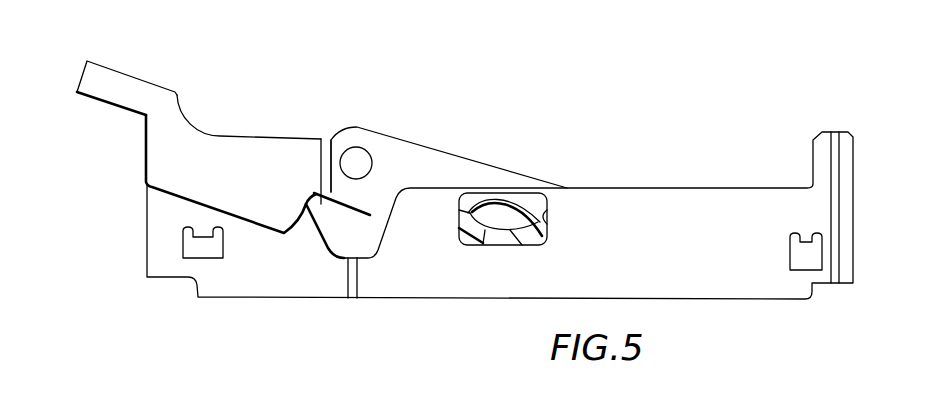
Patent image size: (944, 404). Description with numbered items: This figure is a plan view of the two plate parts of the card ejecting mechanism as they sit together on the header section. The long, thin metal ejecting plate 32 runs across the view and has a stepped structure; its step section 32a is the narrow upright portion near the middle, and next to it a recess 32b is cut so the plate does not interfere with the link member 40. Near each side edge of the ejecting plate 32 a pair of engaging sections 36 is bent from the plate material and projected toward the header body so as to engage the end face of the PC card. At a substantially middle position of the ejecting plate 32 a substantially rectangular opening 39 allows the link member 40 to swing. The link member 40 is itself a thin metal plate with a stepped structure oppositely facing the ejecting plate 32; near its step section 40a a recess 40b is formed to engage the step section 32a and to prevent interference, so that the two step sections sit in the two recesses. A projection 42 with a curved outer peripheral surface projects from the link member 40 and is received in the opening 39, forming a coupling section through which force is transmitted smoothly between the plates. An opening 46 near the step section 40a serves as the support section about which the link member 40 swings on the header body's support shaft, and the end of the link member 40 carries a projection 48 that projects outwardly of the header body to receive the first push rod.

The ejecting plate 32 is at (488, 277).
The step section 32a is at (349, 292).
The recess 32b is at (328, 242).
The engaging sections 36 is at (212, 248).
The opening 39 is at (547, 224).
The link member 40 is at (220, 136).
The step section 40a is at (313, 138).
The recess 40b is at (366, 220).
The projection 42 is at (497, 212).
The opening 46 is at (354, 160).
The projection 48 is at (113, 82).